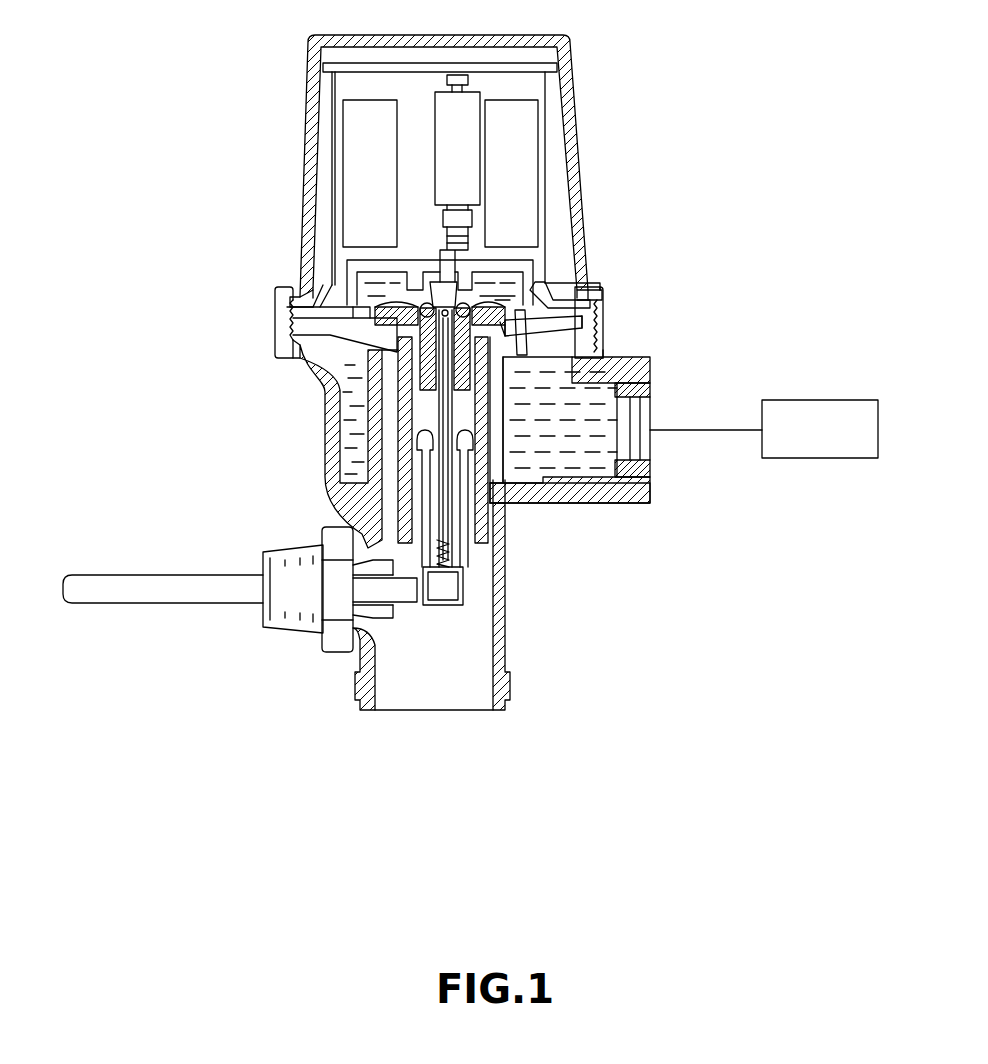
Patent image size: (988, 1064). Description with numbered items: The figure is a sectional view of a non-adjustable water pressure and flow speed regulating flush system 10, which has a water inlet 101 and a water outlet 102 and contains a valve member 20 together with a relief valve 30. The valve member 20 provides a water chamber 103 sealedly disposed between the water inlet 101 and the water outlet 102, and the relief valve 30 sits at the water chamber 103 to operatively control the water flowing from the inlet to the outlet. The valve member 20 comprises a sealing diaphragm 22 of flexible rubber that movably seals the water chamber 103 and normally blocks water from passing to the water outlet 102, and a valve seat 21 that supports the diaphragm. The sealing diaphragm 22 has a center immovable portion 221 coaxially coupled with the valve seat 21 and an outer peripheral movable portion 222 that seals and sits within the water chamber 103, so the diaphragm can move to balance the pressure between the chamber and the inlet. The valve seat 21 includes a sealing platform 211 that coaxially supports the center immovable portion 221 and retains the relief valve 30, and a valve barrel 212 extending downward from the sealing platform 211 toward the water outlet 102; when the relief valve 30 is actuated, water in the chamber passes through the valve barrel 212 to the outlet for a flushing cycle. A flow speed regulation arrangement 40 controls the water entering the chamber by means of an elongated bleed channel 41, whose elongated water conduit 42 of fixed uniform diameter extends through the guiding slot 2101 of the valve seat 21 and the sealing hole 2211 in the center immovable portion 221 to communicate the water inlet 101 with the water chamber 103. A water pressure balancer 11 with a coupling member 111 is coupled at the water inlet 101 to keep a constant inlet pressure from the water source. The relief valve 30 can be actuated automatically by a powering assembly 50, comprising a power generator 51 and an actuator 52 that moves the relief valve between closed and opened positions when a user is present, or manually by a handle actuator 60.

The flush system 10 is at (760, 522).
The water inlet 101 is at (599, 448).
The water outlet 102 is at (439, 695).
The water chamber 103 is at (370, 300).
The water pressure balancer 11 is at (650, 387).
The coupling member 111 is at (662, 462).
The valve member 20 is at (742, 267).
The valve seat 21 is at (672, 305).
The sealing platform 211 is at (532, 312).
The guiding slot 2101 is at (518, 315).
The sealing diaphragm 22 is at (228, 375).
The center immovable portion 221 is at (390, 347).
The sealing hole 2211 is at (521, 362).
The outer peripheral movable portion 222 is at (300, 322).
The valve barrel 212 is at (478, 463).
The relief valve 30 is at (443, 290).
The flow speed regulation arrangement 40 is at (775, 323).
The bleed channel 41 is at (702, 310).
The elongated water conduit 42 is at (598, 320).
The powering assembly 50 is at (572, 105).
The power generator 51 is at (458, 115).
The actuator 52 is at (456, 275).
The handle actuator 60 is at (145, 592).